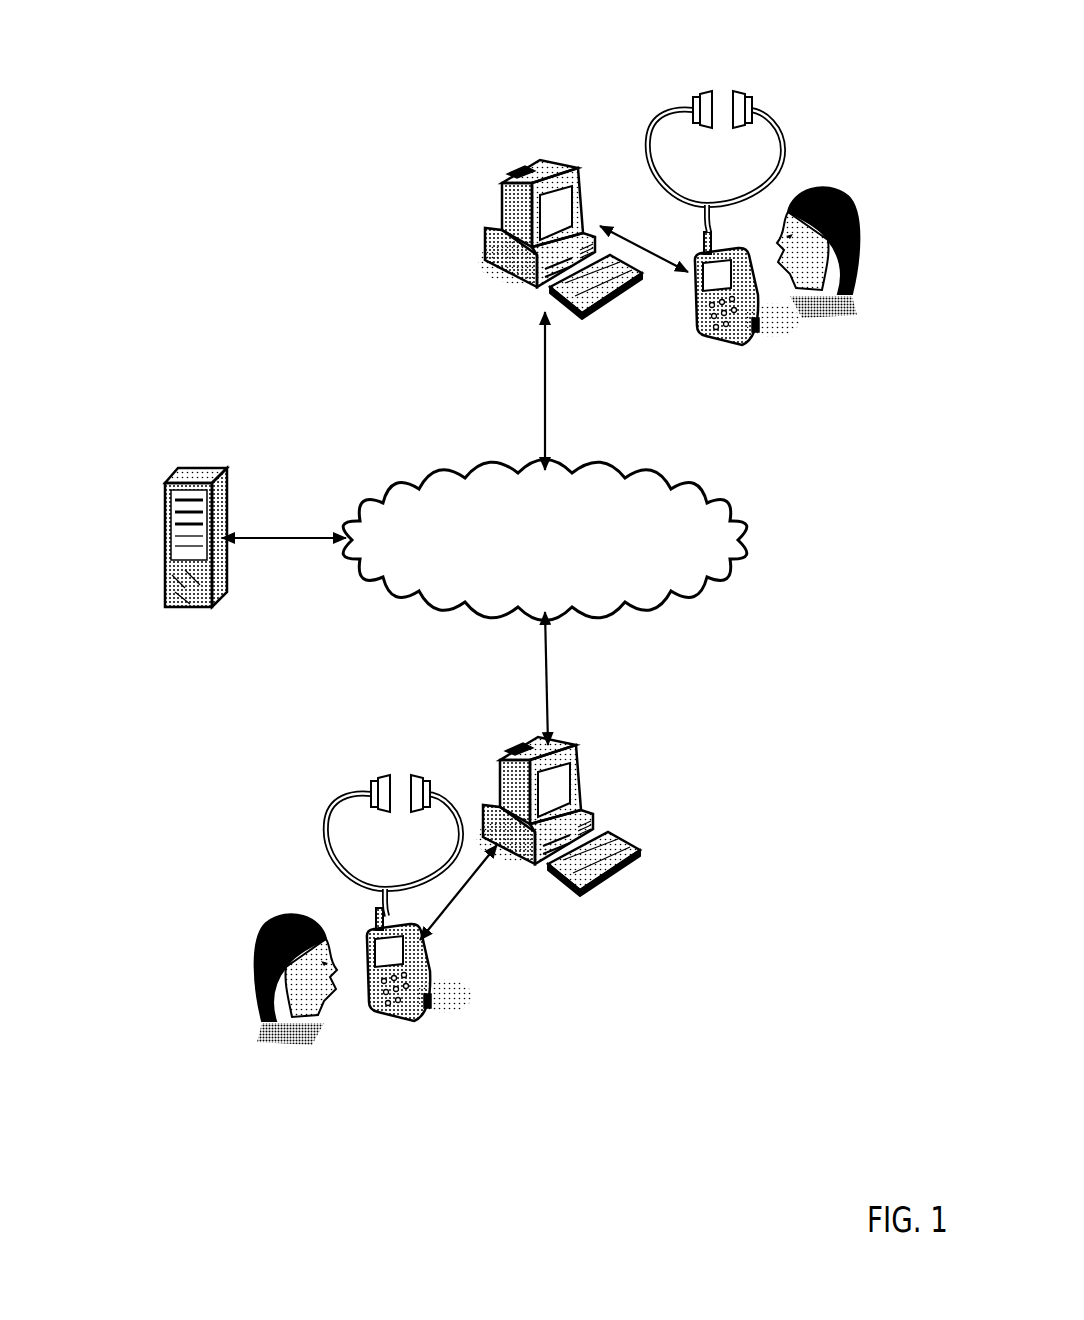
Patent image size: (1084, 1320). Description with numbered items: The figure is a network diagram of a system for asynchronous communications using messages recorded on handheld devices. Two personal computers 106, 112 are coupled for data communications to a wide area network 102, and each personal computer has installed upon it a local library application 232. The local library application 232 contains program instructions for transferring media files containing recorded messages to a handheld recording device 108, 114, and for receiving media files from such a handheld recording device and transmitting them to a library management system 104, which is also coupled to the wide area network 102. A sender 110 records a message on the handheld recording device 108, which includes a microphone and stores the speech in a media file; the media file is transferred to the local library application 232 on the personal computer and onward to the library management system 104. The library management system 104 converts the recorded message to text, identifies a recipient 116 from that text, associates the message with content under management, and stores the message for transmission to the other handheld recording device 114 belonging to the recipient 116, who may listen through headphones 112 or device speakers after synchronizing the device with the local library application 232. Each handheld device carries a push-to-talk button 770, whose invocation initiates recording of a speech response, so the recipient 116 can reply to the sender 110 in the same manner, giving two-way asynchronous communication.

The wide area network 102 is at (590, 551).
The library management system 104 is at (355, 456).
The personal computer 106 is at (436, 261).
The handheld recording device 108 is at (748, 437).
The sender 110 is at (915, 261).
The personal computer / headphones 112 is at (325, 860).
The handheld recording device 114 is at (438, 1122).
The recipient 116 is at (231, 1046).
The local library application 232 is at (693, 806).
The push-to-talk button 770 is at (772, 333).